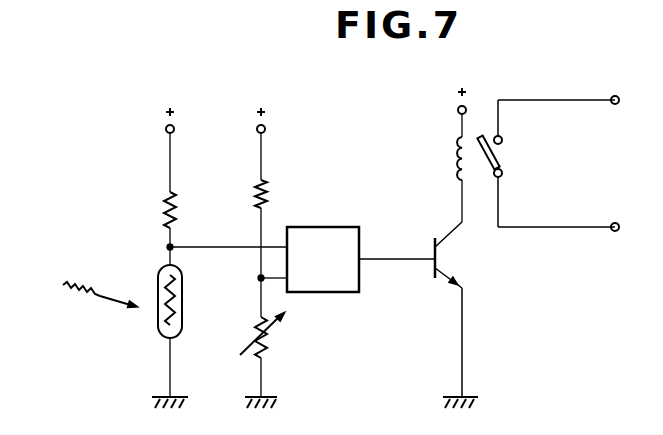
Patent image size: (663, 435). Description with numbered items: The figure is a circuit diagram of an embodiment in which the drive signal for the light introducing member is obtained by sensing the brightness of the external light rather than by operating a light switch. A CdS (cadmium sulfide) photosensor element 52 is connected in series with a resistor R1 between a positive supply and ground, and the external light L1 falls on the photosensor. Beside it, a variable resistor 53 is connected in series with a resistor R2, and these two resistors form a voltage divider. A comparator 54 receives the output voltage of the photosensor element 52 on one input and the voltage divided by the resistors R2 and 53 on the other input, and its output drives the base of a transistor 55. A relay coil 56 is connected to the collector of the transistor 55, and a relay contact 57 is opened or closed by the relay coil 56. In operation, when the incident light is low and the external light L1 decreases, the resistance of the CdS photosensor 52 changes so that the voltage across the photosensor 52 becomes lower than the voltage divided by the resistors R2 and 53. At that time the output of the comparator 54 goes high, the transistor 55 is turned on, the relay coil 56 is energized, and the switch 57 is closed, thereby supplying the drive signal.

The resistor R1 is at (178, 205).
The resistor R2 is at (268, 196).
The external light L1 is at (85, 292).
The CdS photosensor element 52 is at (183, 303).
The variable resistor 53 is at (279, 347).
The comparator 54 is at (338, 232).
The transistor 55 is at (443, 260).
The relay coil 56 is at (456, 163).
The relay contact 57 is at (497, 152).